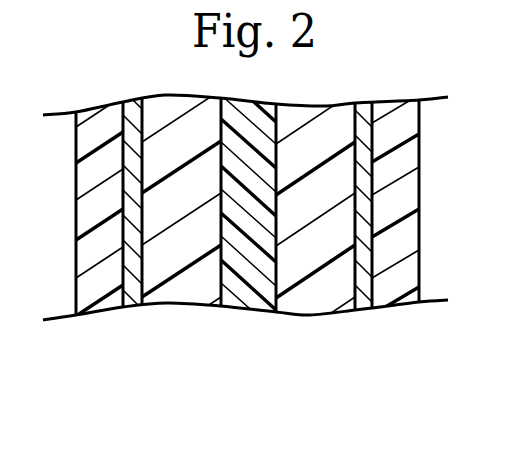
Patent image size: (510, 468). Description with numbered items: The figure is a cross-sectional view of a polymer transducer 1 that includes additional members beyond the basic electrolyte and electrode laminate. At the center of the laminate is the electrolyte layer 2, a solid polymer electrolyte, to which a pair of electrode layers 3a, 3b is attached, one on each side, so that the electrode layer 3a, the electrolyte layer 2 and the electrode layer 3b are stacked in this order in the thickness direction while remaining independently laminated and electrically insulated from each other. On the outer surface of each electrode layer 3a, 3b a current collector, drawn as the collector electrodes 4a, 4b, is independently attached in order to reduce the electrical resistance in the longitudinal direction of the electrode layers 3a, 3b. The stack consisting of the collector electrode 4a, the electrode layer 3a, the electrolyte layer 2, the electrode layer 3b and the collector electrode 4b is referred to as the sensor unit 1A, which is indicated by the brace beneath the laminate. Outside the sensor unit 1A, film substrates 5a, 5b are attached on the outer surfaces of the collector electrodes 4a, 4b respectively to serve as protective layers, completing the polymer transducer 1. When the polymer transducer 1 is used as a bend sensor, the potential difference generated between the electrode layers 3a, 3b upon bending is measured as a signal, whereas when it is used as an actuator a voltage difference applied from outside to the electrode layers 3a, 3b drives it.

The polymer transducer 1 is at (255, 239).
The sensor unit 1A is at (254, 237).
The electrolyte layer 2 is at (252, 298).
The electrode layer 3a is at (168, 293).
The electrode layer 3b is at (309, 298).
The collector electrode 4a is at (133, 293).
The collector electrode 4b is at (365, 226).
The film substrate 5a is at (98, 293).
The film substrate 5b is at (408, 297).